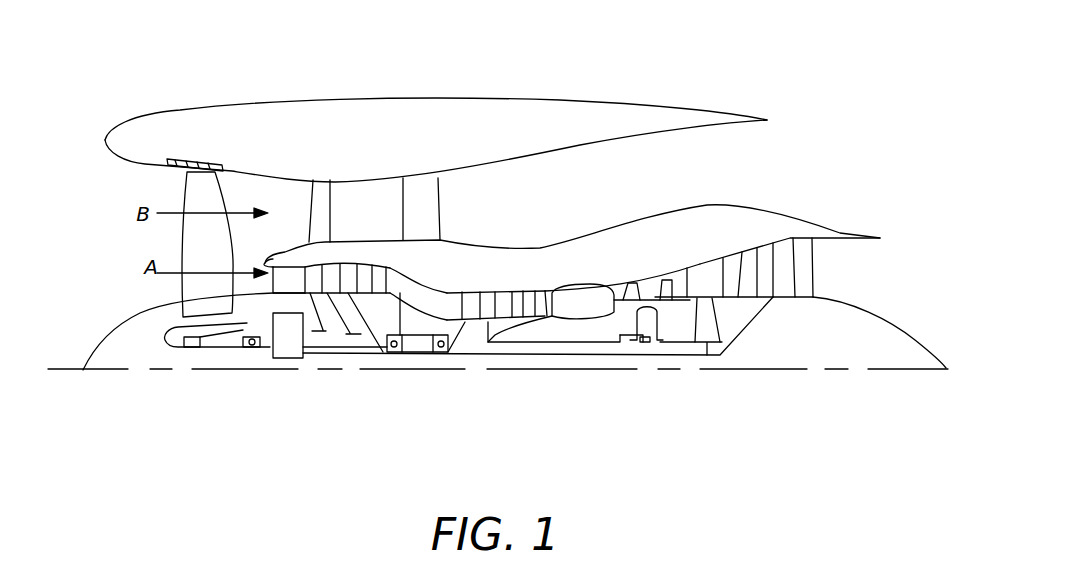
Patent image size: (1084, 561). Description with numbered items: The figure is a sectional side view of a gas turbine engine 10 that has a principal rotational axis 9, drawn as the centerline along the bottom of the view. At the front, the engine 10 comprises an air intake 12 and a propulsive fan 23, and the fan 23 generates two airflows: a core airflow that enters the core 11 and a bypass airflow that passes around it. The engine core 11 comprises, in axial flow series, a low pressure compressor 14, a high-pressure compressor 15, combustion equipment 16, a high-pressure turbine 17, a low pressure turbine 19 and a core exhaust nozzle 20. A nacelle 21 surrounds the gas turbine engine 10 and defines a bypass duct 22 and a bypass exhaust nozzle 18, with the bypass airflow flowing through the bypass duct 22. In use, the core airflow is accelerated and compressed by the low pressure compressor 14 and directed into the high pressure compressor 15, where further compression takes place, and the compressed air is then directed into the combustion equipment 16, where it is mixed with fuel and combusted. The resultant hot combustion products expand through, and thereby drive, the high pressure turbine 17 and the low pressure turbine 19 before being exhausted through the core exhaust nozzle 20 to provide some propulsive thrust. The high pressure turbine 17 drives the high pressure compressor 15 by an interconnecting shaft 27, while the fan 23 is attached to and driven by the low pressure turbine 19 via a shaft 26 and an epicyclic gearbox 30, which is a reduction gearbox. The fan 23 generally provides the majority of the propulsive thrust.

The principal rotational axis 9 is at (820, 372).
The gas turbine engine 10 is at (185, 113).
The core 11 is at (550, 272).
The air intake 12 is at (131, 184).
The low pressure compressor 14 is at (358, 270).
The high-pressure compressor 15 is at (510, 300).
The combustion equipment 16 is at (580, 305).
The high-pressure turbine 17 is at (647, 287).
The bypass exhaust nozzle 18 is at (756, 154).
The low pressure turbine 19 is at (784, 250).
The core exhaust nozzle 20 is at (842, 272).
The nacelle 21 is at (417, 108).
The bypass duct 22 is at (711, 176).
The propulsive fan 23 is at (188, 238).
The shaft 26 is at (500, 358).
The interconnecting shaft 27 is at (538, 344).
The epicyclic gearbox 30 is at (285, 360).